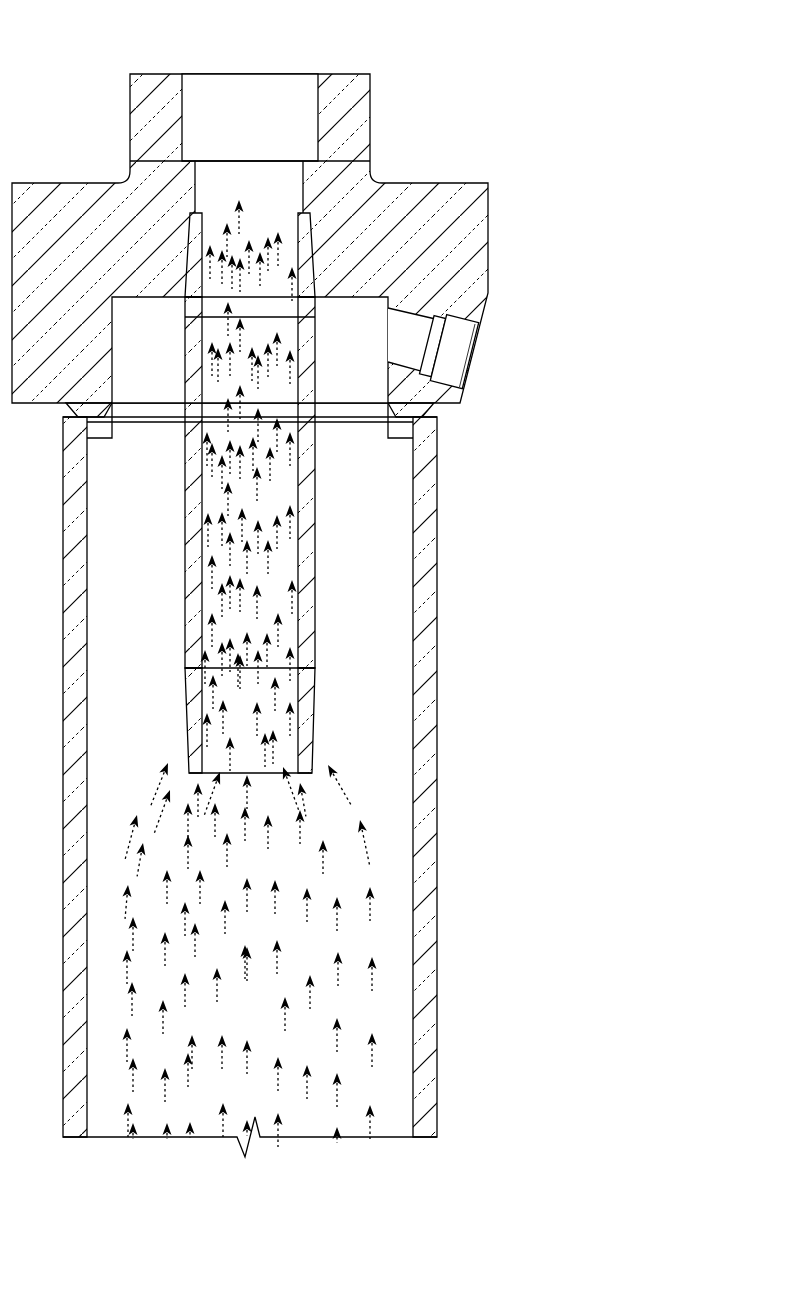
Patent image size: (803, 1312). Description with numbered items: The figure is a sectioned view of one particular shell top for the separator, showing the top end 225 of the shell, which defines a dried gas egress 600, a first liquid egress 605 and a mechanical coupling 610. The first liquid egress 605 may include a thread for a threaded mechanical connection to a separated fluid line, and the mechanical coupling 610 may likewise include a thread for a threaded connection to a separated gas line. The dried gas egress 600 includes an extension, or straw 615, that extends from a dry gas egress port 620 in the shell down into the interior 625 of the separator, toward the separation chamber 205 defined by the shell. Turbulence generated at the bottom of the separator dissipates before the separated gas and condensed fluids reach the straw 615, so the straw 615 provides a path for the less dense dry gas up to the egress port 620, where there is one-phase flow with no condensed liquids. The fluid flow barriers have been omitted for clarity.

The dried gas egress 600 is at (164, 53).
The mechanical coupling 610 is at (349, 73).
The dry gas egress port 620 is at (315, 272).
The first liquid egress 605 is at (473, 357).
The straw 615 is at (317, 490).
The interior 625 is at (393, 749).
The separation chamber 205 is at (272, 1004).
The top end of the shell 225 is at (602, 74).